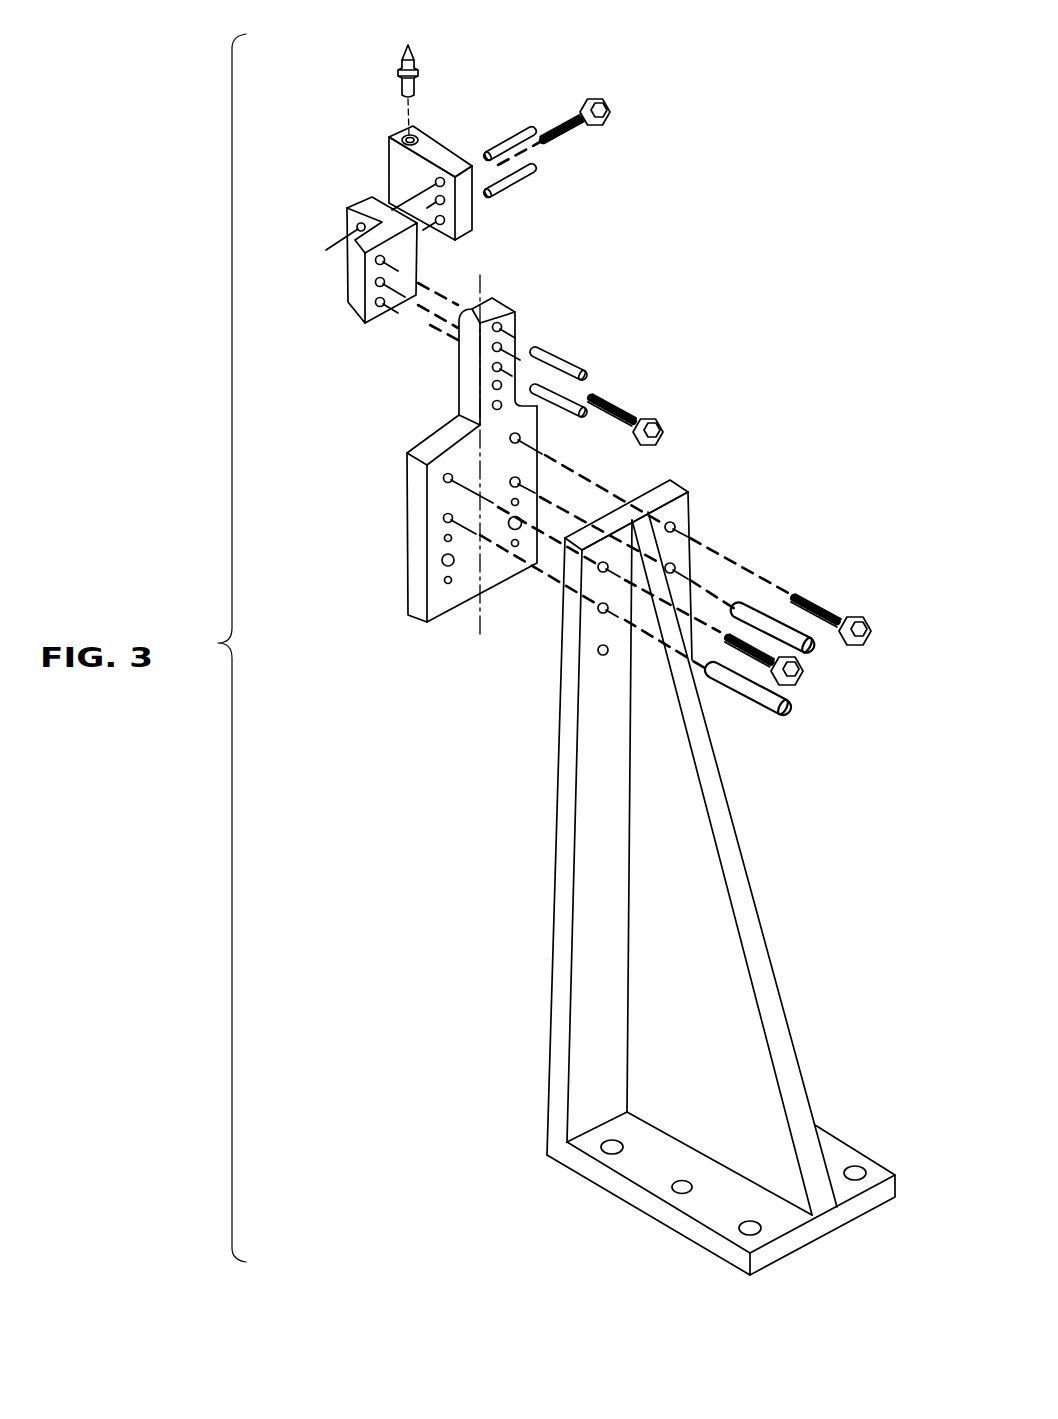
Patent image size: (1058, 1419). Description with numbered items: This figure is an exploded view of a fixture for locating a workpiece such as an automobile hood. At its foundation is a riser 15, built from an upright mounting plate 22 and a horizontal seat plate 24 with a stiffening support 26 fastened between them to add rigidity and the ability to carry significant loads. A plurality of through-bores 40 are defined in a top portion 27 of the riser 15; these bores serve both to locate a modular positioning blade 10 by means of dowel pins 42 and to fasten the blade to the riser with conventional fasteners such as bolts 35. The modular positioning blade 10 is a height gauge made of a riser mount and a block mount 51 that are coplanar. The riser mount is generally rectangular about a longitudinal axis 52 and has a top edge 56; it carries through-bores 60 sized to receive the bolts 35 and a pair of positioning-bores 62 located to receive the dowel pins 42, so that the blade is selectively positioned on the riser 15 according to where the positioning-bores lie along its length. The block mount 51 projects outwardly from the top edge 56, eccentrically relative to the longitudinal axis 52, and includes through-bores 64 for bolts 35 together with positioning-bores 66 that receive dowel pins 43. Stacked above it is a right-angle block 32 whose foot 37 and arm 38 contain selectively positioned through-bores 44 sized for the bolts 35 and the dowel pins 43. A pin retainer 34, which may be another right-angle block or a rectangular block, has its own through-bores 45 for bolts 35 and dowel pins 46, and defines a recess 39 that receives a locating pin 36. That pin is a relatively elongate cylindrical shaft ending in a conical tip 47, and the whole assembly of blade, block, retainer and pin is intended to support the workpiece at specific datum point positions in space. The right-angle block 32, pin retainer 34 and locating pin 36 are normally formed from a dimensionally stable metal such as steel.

The modular positioning blade 10 is at (451, 453).
The riser 15 is at (681, 876).
The mounting plate 22 is at (583, 752).
The seat plate 24 is at (838, 1152).
The stiffening support 26 is at (725, 943).
The top portion 27 is at (562, 693).
The right-angle block 32 is at (395, 276).
The pin retainer 34 is at (468, 156).
The bolts 35 is at (612, 108).
The locating pin 36 is at (420, 70).
The foot 37 is at (395, 250).
The arm 38 is at (367, 202).
The recess 39 is at (414, 138).
The through-bores 40 is at (675, 526).
The dowel pins 42 is at (813, 655).
The dowel pins 43 is at (571, 349).
The through-bores 44 is at (385, 282).
The through-bores 45 is at (443, 202).
The dowel pins 46 is at (526, 126).
The conical tip 47 is at (406, 45).
The block mount 51 is at (487, 354).
The longitudinal axis 52 is at (484, 270).
The top edge 56 is at (433, 448).
The through-bores 60 is at (446, 480).
The positioning-bores 62 is at (445, 520).
The through-bores 64 is at (493, 385).
The positioning-bores 66 is at (493, 405).